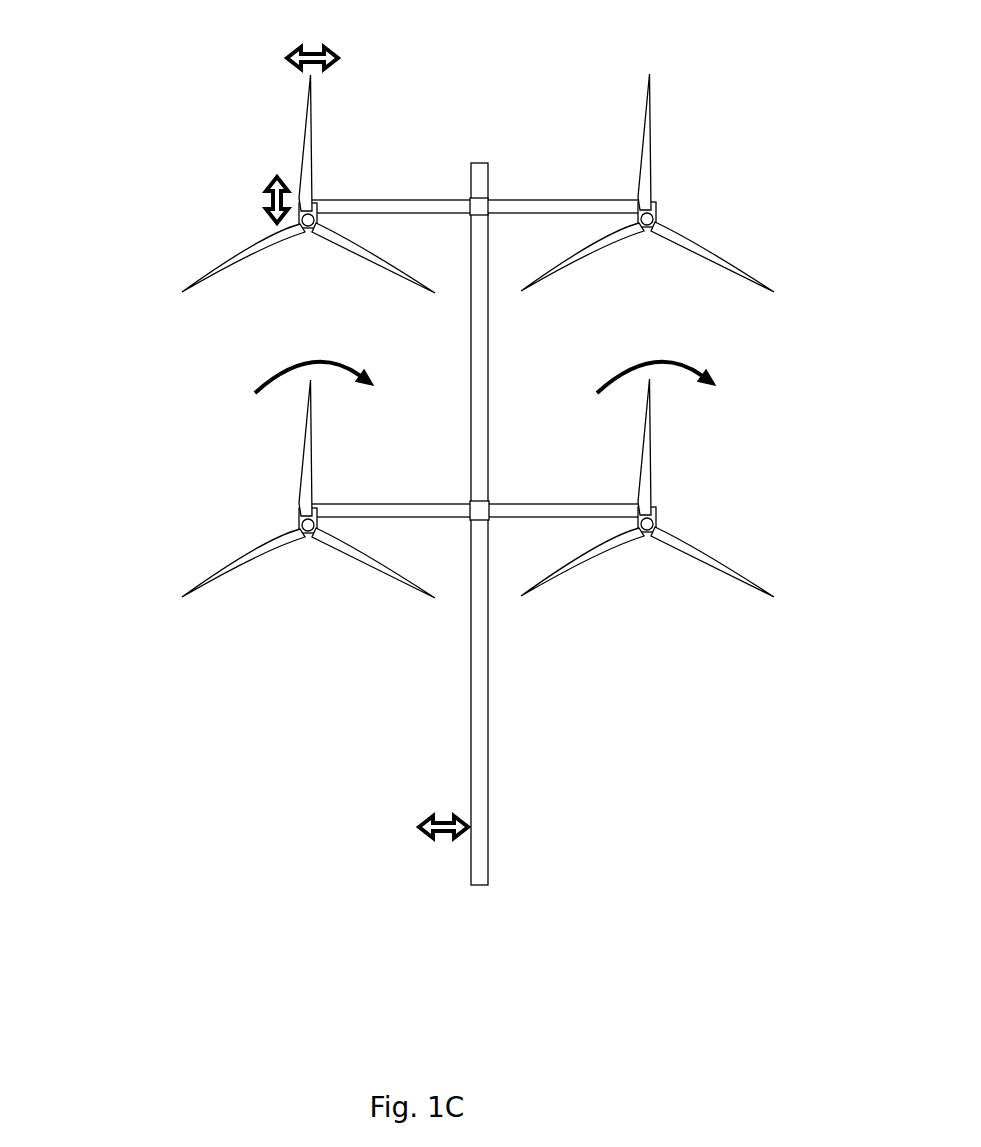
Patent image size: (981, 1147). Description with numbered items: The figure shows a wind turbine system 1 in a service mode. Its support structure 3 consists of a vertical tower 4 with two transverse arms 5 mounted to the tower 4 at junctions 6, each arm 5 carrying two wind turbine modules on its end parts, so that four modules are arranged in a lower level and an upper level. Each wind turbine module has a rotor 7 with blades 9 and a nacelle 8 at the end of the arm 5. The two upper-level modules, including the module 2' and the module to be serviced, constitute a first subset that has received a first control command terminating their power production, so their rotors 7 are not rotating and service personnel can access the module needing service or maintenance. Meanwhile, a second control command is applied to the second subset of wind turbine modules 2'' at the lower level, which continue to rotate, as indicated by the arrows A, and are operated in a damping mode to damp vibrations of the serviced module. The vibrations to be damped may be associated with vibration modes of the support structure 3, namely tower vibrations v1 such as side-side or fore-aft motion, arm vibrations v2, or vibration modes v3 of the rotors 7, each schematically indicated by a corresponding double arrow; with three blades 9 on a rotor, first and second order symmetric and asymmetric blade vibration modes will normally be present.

The wind turbine system 1 is at (159, 152).
The upper wind turbine module 2' is at (649, 213).
The second subset of wind turbine modules 2'' is at (478, 518).
The support structure 3 is at (492, 524).
The tower 4 is at (468, 703).
The arms 5 is at (538, 199).
The junctions 6 is at (471, 198).
The rotor 7 is at (733, 178).
The nacelle 8 is at (657, 522).
The blades 9 is at (652, 157).
The tower vibrations v1 is at (443, 811).
The arm vibrations v2 is at (261, 190).
The rotor vibration modes v3 is at (312, 36).
The rotor rotation arrows A is at (485, 359).